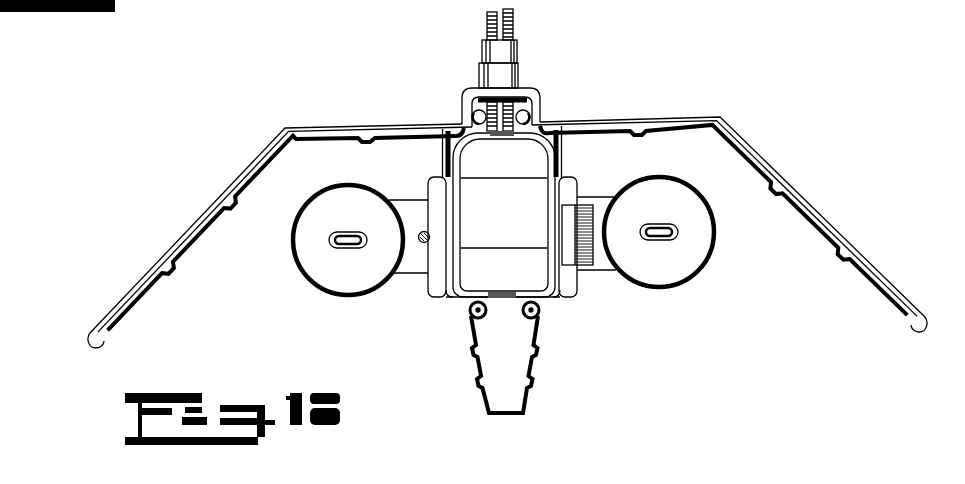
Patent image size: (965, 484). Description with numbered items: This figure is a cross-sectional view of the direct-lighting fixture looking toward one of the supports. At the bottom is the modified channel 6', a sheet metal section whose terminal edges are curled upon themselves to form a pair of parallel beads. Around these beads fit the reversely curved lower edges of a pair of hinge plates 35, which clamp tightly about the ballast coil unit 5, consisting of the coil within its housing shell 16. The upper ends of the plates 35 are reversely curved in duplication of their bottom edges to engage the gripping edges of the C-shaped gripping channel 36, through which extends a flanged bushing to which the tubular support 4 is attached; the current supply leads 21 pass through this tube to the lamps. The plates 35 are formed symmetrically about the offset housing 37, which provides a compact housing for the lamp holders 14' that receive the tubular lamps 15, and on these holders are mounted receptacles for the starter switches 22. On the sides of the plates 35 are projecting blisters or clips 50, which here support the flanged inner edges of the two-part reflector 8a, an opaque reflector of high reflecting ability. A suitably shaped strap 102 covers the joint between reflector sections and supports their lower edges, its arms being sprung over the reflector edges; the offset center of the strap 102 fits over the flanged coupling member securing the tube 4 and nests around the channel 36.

The strap 102 is at (394, 124).
The reflector 8a is at (277, 147).
The current supply leads 21 is at (515, 18).
The tubular support 4 is at (517, 51).
The gripping channel 36 is at (537, 103).
The blisters or clips 50 is at (444, 154).
The offset housing 37 is at (432, 189).
The ballast coil unit 5 is at (504, 214).
The starter switches 22 is at (585, 206).
The lamps 15 is at (302, 273).
The lamp holders 14' is at (506, 260).
The hinge plates 35 is at (450, 297).
The housing shell 16 is at (500, 300).
The modified channel 6' is at (520, 357).